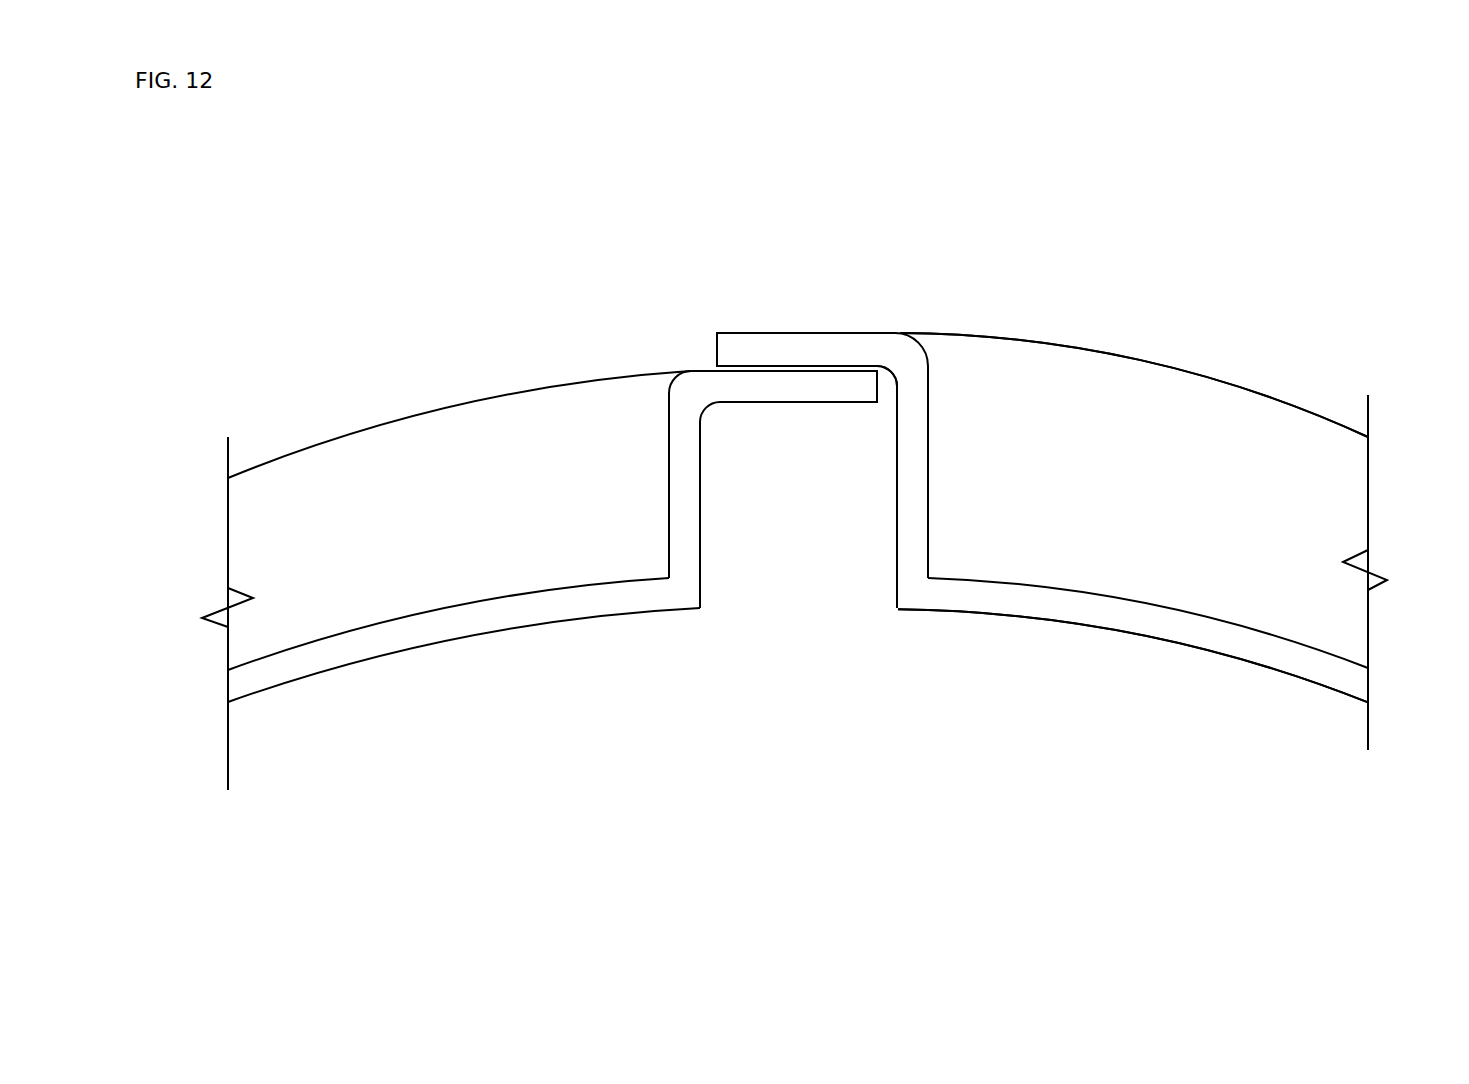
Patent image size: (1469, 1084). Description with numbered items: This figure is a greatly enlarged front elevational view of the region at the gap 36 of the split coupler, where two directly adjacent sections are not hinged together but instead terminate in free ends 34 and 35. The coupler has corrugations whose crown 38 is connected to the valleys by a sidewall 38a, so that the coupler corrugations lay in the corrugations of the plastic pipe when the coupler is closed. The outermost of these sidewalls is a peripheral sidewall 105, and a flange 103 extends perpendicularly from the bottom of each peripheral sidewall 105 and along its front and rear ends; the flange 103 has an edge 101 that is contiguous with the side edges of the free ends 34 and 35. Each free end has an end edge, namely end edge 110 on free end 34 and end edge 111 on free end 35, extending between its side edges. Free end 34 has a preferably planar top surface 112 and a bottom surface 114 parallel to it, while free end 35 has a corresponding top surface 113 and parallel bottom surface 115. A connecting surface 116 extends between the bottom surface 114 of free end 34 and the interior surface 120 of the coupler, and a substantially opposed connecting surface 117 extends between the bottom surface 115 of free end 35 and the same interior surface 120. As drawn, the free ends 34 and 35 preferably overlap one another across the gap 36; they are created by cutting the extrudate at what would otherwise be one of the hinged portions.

The free end 34 is at (869, 405).
The free end 35 is at (808, 334).
The gap 36 is at (711, 364).
The crown 38 is at (452, 405).
The sidewall 38a is at (1212, 418).
The edge 101 is at (636, 586).
The flange 103 is at (1252, 624).
The peripheral sidewall 105 is at (325, 540).
The end edge 110 is at (880, 383).
The end edge 111 is at (715, 343).
The top surface 112 is at (786, 368).
The top surface 113 is at (737, 333).
The bottom surface 114 is at (798, 405).
The bottom surface 115 is at (840, 362).
The connecting surface 116 is at (702, 552).
The connecting surface 117 is at (897, 580).
The interior surface 120 is at (1205, 647).